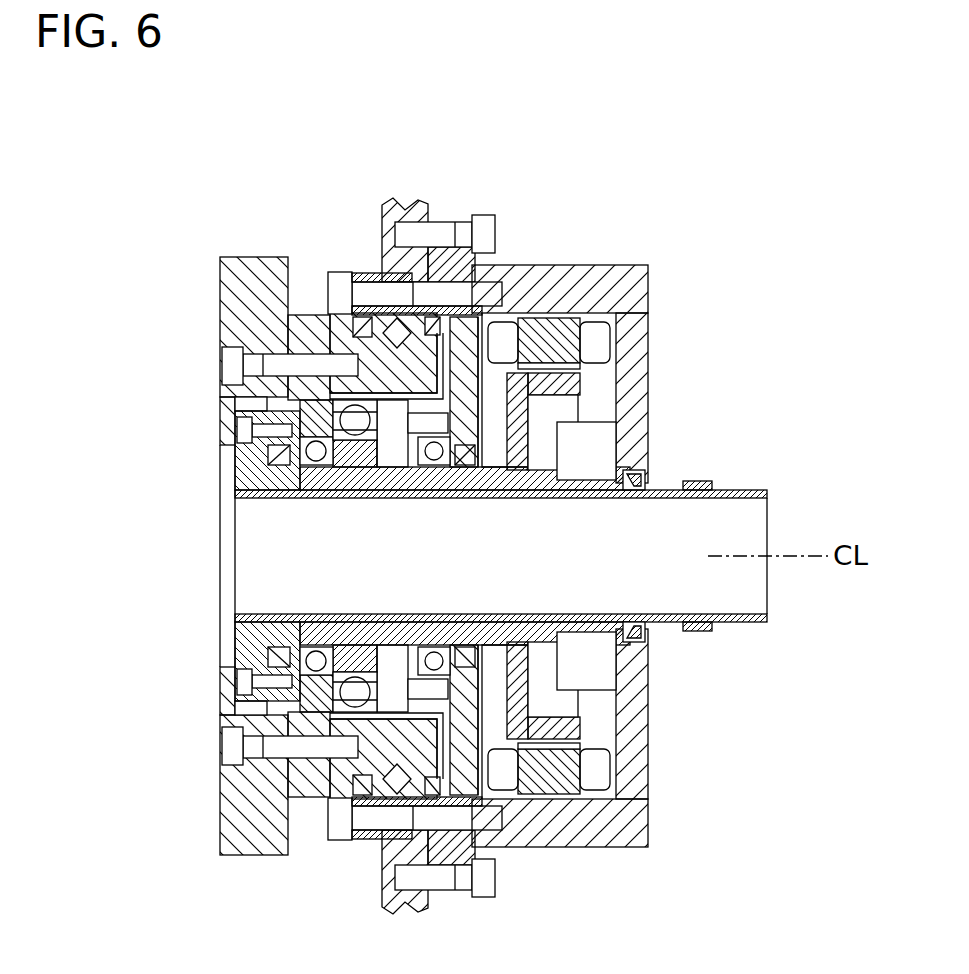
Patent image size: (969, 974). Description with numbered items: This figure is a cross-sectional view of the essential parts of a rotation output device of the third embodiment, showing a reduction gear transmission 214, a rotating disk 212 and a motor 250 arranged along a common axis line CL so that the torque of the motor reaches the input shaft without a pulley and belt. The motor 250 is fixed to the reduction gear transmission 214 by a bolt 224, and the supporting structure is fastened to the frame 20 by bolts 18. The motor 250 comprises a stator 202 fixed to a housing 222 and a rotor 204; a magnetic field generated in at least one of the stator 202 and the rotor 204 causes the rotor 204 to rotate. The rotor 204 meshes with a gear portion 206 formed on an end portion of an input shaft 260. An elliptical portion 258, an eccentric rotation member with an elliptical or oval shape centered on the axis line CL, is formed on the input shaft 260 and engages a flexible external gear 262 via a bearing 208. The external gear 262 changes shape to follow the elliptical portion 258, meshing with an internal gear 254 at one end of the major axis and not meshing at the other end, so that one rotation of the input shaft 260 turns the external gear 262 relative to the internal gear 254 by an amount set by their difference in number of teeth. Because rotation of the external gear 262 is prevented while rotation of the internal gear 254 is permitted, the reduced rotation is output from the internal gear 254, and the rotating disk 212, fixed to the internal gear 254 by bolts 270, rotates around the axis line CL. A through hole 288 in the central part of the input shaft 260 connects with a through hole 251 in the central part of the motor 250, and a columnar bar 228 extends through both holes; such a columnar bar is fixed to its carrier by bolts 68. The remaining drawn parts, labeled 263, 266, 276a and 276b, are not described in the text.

The bolts 18 is at (497, 217).
The frame 20 is at (388, 204).
The bolts 68 is at (240, 432).
The stator 202 is at (595, 330).
The rotor 204 is at (570, 386).
The gear portion 206 is at (560, 470).
The bearing 208 is at (325, 335).
The rotating disk 212 is at (220, 270).
The reduction gear transmission 214 is at (438, 188).
The housing 222 is at (623, 285).
The bolt 224 is at (344, 278).
The columnar bar 228 is at (735, 489).
The motor 250 is at (676, 356).
The through hole 251 is at (600, 615).
The internal gear 254 is at (313, 750).
The elliptical portion 258 is at (233, 710).
The input shaft 260 is at (508, 637).
The external gear 262 is at (357, 775).
The shaft 263 is at (767, 517).
The bearing holder 266 is at (232, 455).
The bolts 270 is at (228, 366).
The bearing 276a is at (318, 658).
The bearing 276b is at (483, 708).
The through hole 288 is at (463, 623).